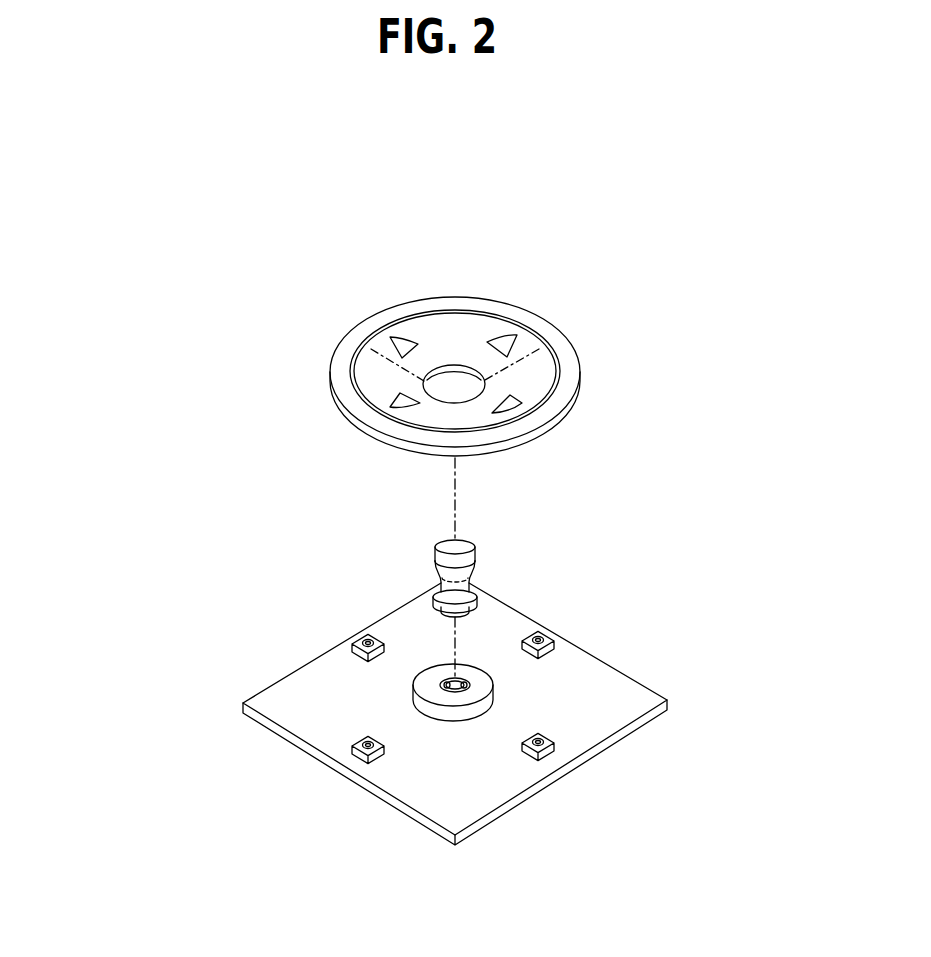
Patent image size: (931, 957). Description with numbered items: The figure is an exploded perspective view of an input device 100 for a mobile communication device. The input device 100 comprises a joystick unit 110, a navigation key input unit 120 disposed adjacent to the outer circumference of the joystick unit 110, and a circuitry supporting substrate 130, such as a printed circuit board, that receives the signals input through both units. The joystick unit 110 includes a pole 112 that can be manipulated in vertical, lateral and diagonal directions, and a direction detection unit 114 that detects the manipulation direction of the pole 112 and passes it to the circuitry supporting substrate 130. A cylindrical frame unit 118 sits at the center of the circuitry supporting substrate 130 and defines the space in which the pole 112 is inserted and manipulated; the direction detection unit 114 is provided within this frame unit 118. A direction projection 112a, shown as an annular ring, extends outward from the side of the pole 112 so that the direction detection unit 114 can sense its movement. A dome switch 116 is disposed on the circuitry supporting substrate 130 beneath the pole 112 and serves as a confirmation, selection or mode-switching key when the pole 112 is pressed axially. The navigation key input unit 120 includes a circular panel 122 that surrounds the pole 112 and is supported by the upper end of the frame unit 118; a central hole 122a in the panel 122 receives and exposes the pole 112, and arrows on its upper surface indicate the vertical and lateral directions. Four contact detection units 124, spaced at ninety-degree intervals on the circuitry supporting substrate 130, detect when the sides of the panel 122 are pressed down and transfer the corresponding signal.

The input device 100 is at (793, 221).
The joystick unit 110 is at (612, 523).
The pole 112 is at (483, 559).
The direction projection 112a is at (432, 598).
The direction detection unit 114 is at (470, 678).
The dome switch 116 is at (466, 676).
The frame unit 118 is at (483, 684).
The navigation key input unit 120 is at (109, 507).
The panel 122 is at (342, 400).
The central hole 122a is at (465, 386).
The contact detection unit 124 is at (352, 647).
The circuitry supporting substrate 130 is at (608, 717).